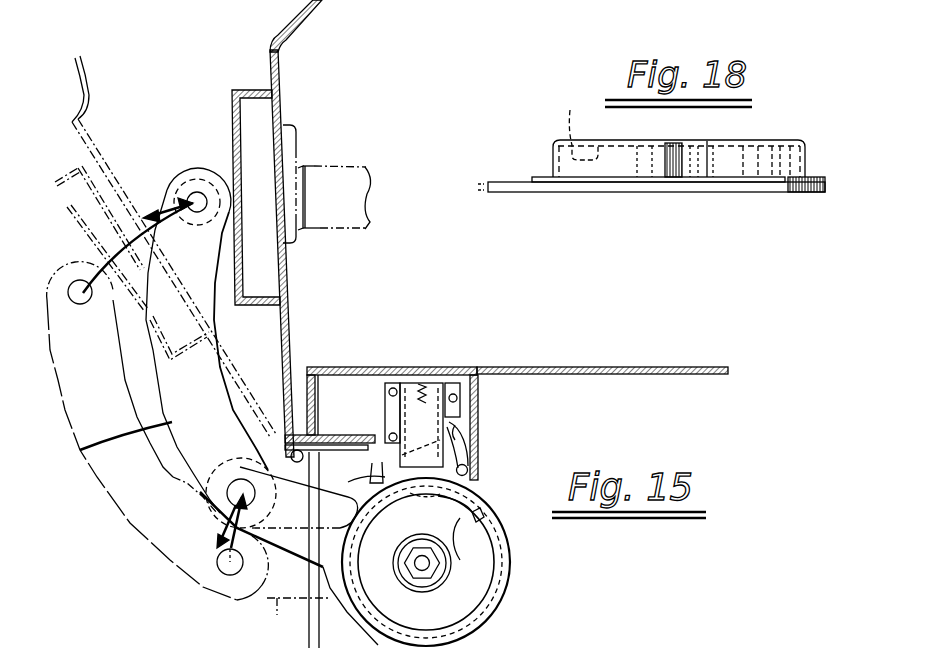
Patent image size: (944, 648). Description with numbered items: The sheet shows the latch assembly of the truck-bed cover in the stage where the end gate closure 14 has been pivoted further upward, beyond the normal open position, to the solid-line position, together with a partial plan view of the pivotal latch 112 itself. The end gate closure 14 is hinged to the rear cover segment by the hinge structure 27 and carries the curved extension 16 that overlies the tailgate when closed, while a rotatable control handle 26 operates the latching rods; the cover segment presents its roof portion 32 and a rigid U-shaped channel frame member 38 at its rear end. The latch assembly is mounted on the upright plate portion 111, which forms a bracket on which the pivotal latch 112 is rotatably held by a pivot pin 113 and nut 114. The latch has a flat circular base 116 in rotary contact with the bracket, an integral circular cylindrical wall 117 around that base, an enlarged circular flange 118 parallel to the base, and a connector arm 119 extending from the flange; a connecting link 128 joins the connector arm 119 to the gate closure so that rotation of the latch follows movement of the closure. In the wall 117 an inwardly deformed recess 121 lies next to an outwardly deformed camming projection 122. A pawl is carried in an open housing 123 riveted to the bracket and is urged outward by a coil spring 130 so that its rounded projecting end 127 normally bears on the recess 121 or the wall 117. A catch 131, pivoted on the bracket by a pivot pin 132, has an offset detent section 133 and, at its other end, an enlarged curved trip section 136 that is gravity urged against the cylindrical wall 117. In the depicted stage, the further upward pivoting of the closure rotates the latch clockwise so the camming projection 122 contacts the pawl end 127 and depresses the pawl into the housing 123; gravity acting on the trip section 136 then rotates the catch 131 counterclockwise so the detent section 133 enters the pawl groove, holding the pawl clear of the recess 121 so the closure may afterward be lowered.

In FIG. 15, the end gate closure 14 is at (115, 175).
In FIG. 15, the curved extension 16 is at (318, 16).
In FIG. 15, the control handle 26 is at (347, 166).
In FIG. 15, the hinge structure 27 is at (297, 463).
In FIG. 15, the roof portion 32 is at (660, 367).
In FIG. 15, the channel frame member 38 is at (350, 375).
In FIG. 15, the upright plate portion 111 is at (495, 645).
In FIG. 15, the pivotal latch 112 is at (384, 555).
In FIG. 18, the pivotal latch 112 is at (801, 136).
In FIG. 15, the pivot pin 113 is at (420, 567).
In FIG. 15, the nut 114 is at (427, 578).
In FIG. 15, the circular base 116 is at (388, 549).
In FIG. 18, the circular base 116 is at (568, 112).
In FIG. 15, the cylindrical wall 117 is at (480, 615).
In FIG. 18, the cylindrical wall 117 is at (780, 162).
In FIG. 15, the circular flange 118 is at (503, 583).
In FIG. 18, the circular flange 118 is at (722, 193).
In FIG. 15, the connector arm 119 is at (298, 548).
In FIG. 18, the connector arm 119 is at (510, 185).
In FIG. 15, the recess 121 is at (461, 535).
In FIG. 18, the recess 121 is at (700, 158).
In FIG. 15, the camming projection 122 is at (408, 490).
In FIG. 18, the camming projection 122 is at (650, 160).
In FIG. 15, the housing 123 is at (403, 405).
In FIG. 15, the projecting end 127 is at (501, 482).
In FIG. 15, the connecting link 128 is at (68, 410).
In FIG. 15, the coil spring 130 is at (440, 372).
In FIG. 15, the catch 131 is at (460, 452).
In FIG. 15, the pivot pin 132 is at (470, 478).
In FIG. 15, the detent section 133 is at (456, 430).
In FIG. 15, the trip section 136 is at (370, 483).